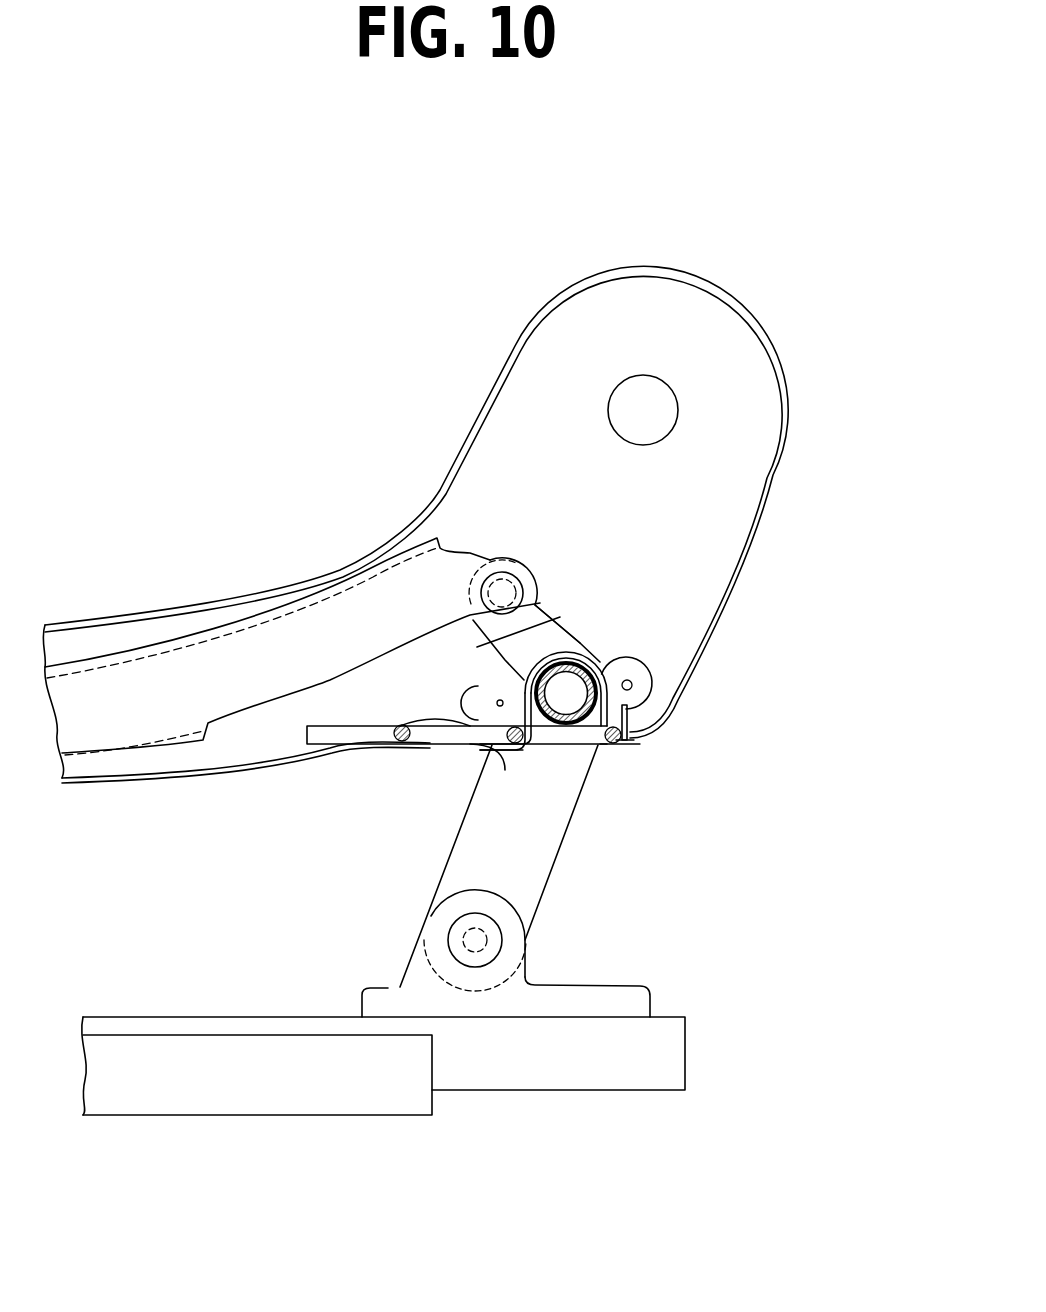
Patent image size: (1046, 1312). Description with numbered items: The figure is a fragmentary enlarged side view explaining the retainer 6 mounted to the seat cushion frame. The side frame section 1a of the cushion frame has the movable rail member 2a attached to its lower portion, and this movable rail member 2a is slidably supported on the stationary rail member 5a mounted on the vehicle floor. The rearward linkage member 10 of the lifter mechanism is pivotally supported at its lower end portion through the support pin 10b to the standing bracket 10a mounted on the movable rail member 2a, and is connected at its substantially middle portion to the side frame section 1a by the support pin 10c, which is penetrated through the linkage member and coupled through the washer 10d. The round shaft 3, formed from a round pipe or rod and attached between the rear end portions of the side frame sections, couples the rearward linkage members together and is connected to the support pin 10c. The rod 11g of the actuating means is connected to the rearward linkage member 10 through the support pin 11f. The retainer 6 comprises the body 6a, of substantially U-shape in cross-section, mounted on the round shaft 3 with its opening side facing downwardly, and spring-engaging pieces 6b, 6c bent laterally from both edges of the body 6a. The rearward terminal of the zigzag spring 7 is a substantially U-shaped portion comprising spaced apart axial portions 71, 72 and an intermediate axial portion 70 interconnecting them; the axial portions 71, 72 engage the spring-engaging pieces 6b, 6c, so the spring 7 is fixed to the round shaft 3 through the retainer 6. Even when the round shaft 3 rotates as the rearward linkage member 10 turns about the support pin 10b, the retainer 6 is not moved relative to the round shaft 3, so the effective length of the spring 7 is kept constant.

The side frame section 1a is at (462, 453).
The rod 11g is at (137, 680).
The support pin 11f is at (574, 650).
The retainer 6 is at (588, 652).
The body 6a is at (594, 668).
The spring-engaging piece 6b is at (507, 752).
The spring-engaging piece 6c is at (632, 741).
The washer 10d is at (650, 662).
The round shaft 3 is at (591, 697).
The axial portion 72 is at (628, 728).
The axial portion 71 is at (468, 720).
The intermediate axial portion 70 is at (540, 746).
The zigzag spring 7 is at (377, 745).
The rearward linkage member 10 is at (556, 879).
The standing bracket 10a is at (393, 964).
The support pin 10b is at (475, 943).
The support pin 10c is at (567, 695).
The movable rail member 2a is at (640, 1073).
The stationary rail member 5a is at (182, 1098).